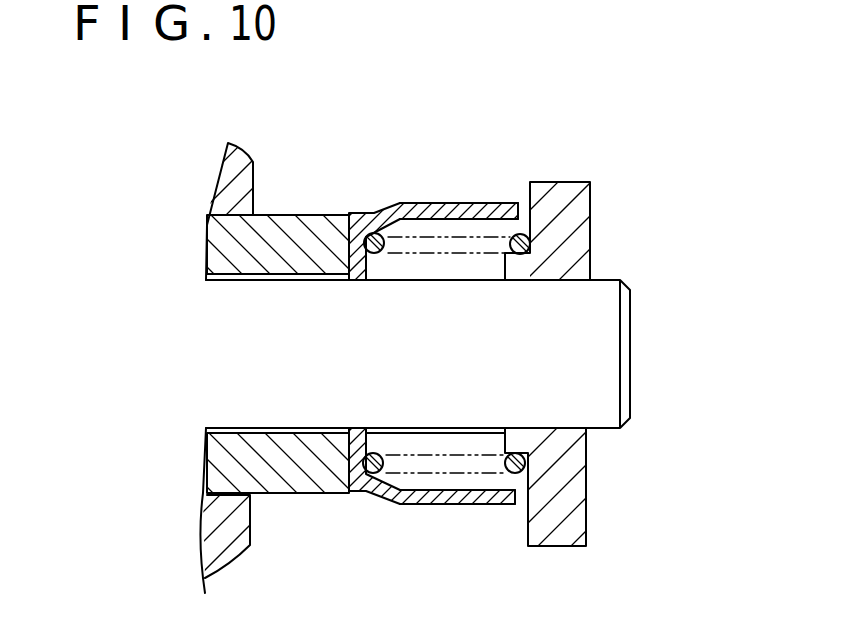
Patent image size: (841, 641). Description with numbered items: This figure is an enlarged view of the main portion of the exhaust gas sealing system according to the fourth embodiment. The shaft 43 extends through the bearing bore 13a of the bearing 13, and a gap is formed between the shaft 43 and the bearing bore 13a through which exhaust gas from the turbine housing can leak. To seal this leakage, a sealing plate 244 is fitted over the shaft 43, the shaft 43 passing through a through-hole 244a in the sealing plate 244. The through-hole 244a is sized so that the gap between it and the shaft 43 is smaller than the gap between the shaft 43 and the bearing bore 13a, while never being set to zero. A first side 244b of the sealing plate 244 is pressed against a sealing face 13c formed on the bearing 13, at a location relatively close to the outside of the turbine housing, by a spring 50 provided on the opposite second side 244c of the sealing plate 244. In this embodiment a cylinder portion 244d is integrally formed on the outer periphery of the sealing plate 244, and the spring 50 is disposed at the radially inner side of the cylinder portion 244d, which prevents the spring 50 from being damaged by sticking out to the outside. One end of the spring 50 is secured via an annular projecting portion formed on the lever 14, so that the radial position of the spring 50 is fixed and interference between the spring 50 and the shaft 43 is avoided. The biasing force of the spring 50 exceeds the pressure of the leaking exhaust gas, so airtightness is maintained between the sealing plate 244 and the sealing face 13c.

The bearing 13 is at (225, 247).
The bearing bore 13a is at (233, 430).
The sealing face 13c is at (361, 490).
The lever 14 is at (583, 500).
The shaft 43 is at (218, 375).
The spring 50 is at (530, 245).
The sealing plate 244 is at (364, 216).
The through-hole 244a is at (356, 430).
The first side 244b is at (330, 217).
The second side 244c is at (365, 444).
The cylinder portion 244d is at (437, 208).